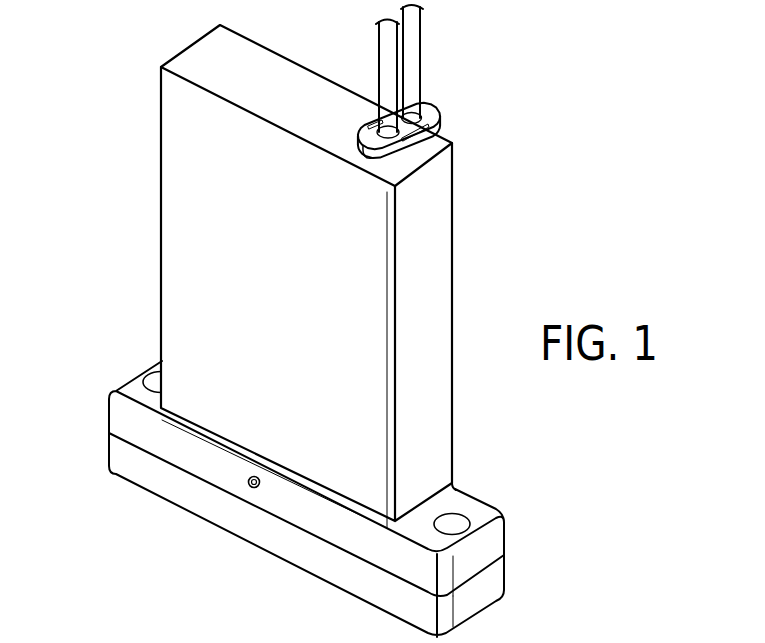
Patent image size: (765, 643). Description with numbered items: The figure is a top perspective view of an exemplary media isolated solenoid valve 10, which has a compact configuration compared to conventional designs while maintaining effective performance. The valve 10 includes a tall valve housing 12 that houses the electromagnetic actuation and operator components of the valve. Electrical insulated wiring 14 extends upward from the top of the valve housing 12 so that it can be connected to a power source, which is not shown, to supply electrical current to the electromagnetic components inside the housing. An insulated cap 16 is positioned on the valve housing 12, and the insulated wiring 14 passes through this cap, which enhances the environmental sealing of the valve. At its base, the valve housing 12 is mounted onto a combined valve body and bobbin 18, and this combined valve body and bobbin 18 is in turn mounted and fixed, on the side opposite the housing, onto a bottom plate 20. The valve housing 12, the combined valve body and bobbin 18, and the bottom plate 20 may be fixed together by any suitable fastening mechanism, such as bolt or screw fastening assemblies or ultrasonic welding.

The valve 10 is at (92, 127).
The valve housing 12 is at (430, 213).
The insulated wiring 14 is at (378, 30).
The insulated cap 16 is at (438, 134).
The combined valve body and bobbin 18 is at (123, 417).
The bottom plate 20 is at (123, 453).